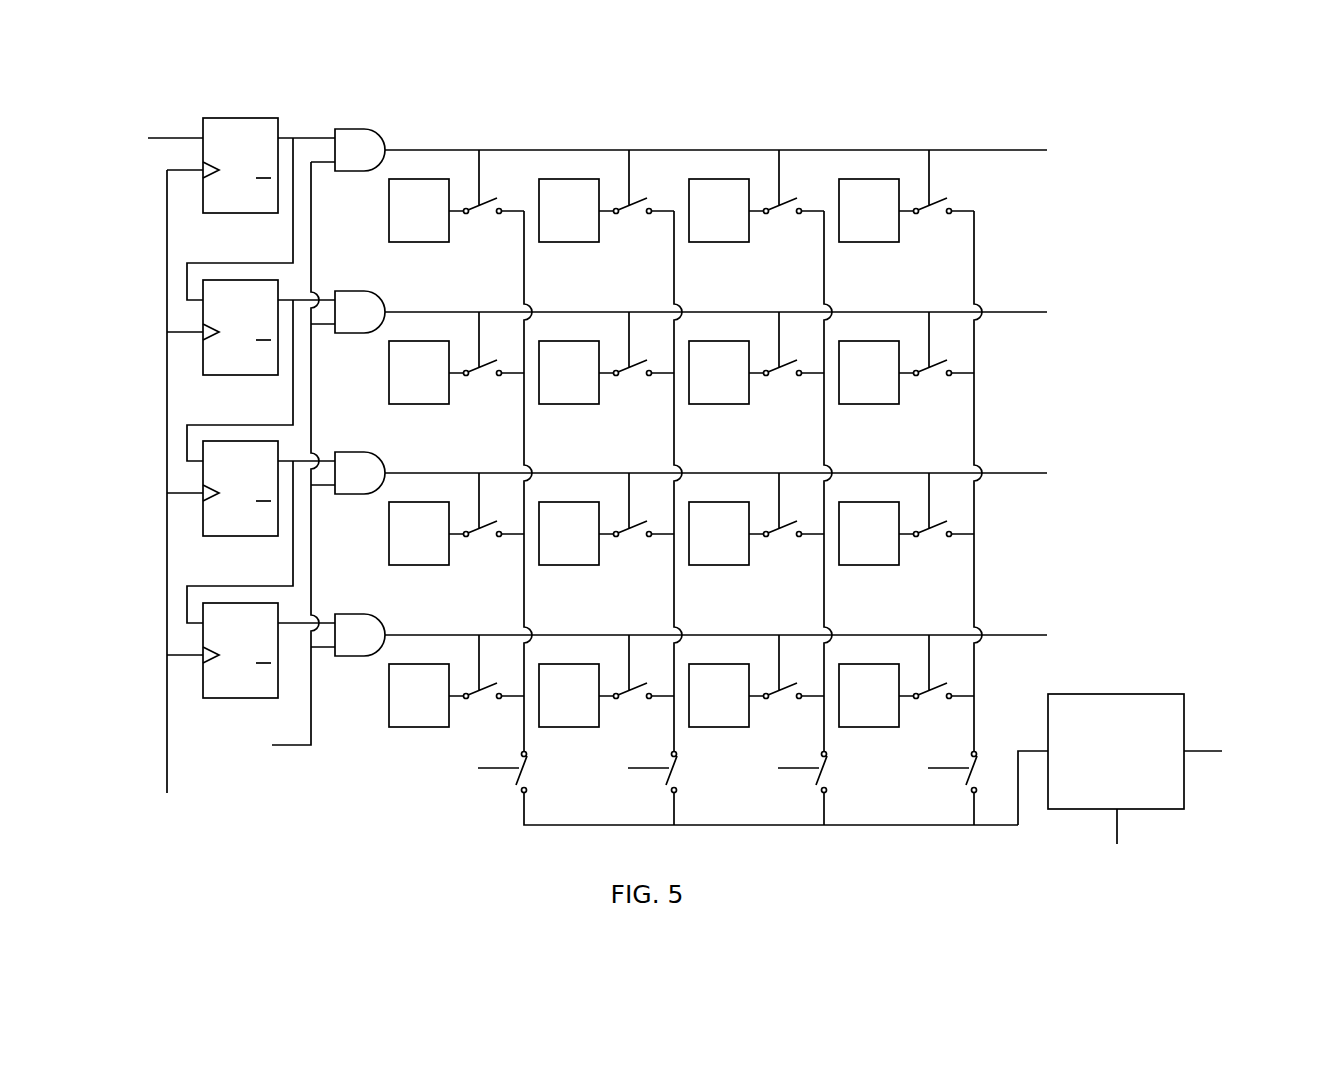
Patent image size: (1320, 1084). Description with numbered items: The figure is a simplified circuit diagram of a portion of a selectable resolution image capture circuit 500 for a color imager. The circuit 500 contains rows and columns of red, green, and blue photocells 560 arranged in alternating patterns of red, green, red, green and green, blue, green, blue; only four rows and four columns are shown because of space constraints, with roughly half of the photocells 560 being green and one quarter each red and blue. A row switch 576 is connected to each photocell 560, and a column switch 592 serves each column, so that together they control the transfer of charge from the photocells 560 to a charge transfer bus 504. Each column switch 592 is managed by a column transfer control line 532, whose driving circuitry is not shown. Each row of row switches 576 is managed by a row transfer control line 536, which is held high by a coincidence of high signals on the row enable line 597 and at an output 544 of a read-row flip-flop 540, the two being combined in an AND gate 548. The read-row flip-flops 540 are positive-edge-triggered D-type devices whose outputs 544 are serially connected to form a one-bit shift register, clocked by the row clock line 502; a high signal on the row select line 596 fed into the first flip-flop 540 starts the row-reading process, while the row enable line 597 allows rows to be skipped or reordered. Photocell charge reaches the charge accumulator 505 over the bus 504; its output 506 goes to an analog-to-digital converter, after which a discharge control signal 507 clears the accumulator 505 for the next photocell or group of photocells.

The selectable resolution image capture circuit 500 is at (697, 117).
The row clock line 502 is at (168, 757).
The charge transfer bus 504 is at (1023, 747).
The charge accumulator 505 is at (1127, 693).
The output of the charge accumulator 506 is at (1207, 753).
The discharge control signal 507 is at (1118, 820).
The column transfer control line 532 is at (493, 770).
The row transfer control line 536 is at (1010, 147).
The read-row flip-flop 540 is at (269, 408).
The output of read-row flip-flop 544 is at (217, 262).
The AND gate 548 is at (360, 392).
The photocell 560 is at (418, 242).
The row switch 576 is at (480, 224).
The column switch 592 is at (536, 772).
The row select line 596 is at (170, 135).
The row enable line 597 is at (298, 745).